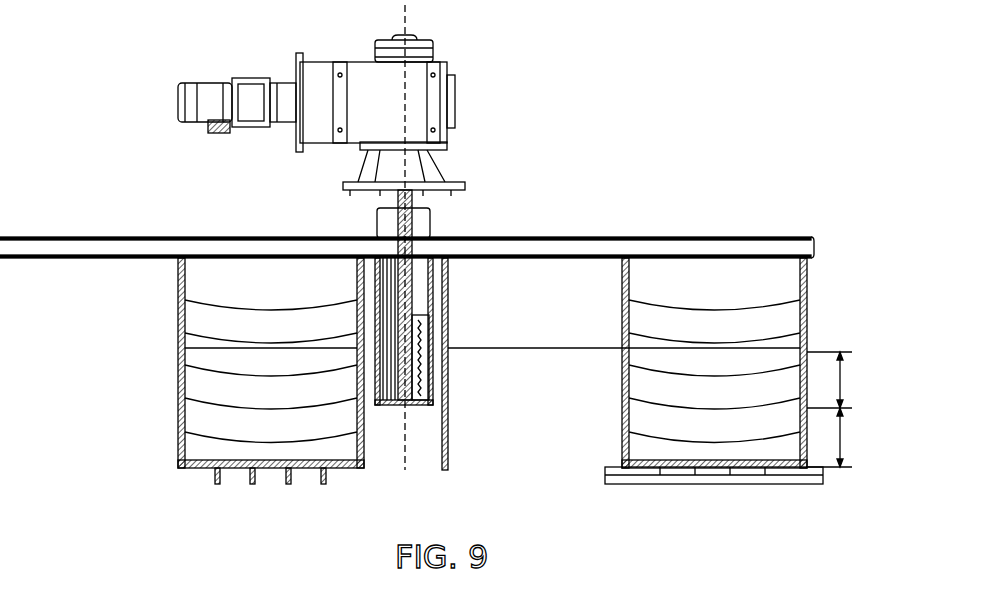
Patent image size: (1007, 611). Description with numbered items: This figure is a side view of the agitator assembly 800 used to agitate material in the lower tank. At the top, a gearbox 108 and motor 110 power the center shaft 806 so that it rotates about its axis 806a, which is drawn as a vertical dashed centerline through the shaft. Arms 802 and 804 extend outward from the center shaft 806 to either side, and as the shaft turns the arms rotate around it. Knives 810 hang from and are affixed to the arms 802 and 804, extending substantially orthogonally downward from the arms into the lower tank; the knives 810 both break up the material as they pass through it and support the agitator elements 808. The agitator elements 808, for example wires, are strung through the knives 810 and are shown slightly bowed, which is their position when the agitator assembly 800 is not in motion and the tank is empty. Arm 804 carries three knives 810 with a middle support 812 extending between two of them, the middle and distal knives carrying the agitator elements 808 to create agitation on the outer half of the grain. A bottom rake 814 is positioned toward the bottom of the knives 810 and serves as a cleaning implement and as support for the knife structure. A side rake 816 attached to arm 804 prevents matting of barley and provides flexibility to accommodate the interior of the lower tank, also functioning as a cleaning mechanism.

The motor 110 is at (176, 100).
The gearbox 108 is at (455, 100).
The axis 806a is at (407, 22).
The agitator assembly 800 is at (566, 194).
The arm 802 is at (170, 237).
The arm 804 is at (685, 237).
The center shaft 806 is at (412, 202).
The agitator elements 808 is at (242, 310).
The knives 810 is at (182, 325).
The middle support 812 is at (607, 352).
The bottom rake 814 is at (720, 485).
The side rake 816 is at (850, 400).